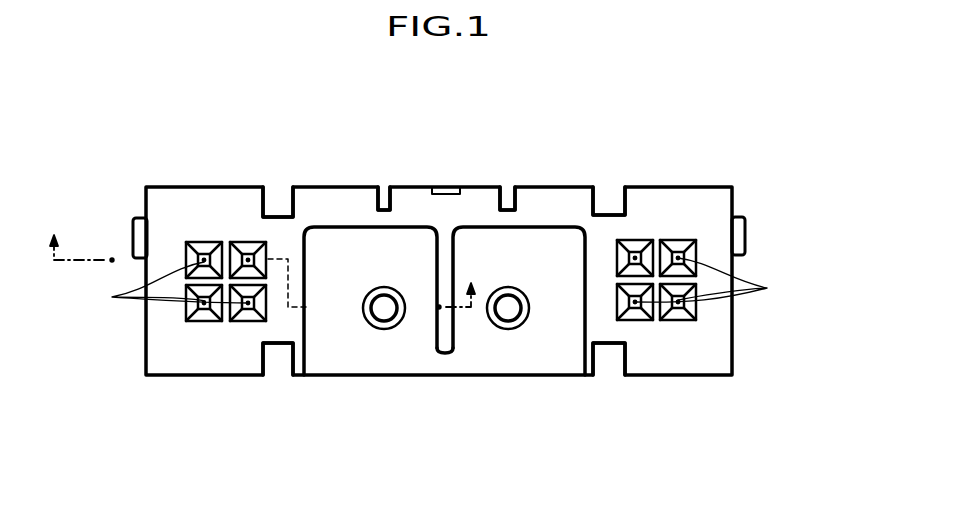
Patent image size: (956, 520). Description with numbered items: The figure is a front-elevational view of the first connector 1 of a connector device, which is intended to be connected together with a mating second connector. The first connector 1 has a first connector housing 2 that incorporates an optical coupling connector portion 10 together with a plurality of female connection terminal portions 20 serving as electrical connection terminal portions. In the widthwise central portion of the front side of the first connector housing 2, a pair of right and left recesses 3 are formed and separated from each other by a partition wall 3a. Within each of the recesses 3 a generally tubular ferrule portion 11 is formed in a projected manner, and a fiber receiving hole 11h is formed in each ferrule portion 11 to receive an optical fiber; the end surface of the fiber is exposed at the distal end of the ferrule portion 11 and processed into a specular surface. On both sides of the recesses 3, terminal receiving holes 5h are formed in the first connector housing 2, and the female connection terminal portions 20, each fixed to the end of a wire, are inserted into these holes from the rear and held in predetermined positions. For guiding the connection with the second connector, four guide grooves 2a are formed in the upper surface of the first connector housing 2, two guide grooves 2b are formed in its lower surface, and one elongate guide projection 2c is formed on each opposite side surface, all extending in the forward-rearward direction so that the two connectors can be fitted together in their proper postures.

The first connector 1 is at (448, 156).
The first connector housing 2 is at (733, 337).
The guide grooves 2a is at (288, 186).
The guide grooves 2b is at (293, 377).
The elongate guide projection 2c is at (133, 222).
The recesses 3 is at (309, 350).
The partition wall 3a is at (450, 357).
The terminal receiving holes 5h is at (444, 285).
The optical coupling connector portion 10 is at (449, 369).
The ferrule portion 11 is at (390, 330).
The fiber receiving hole 11h is at (380, 296).
The female connection terminal portions 20 is at (240, 392).